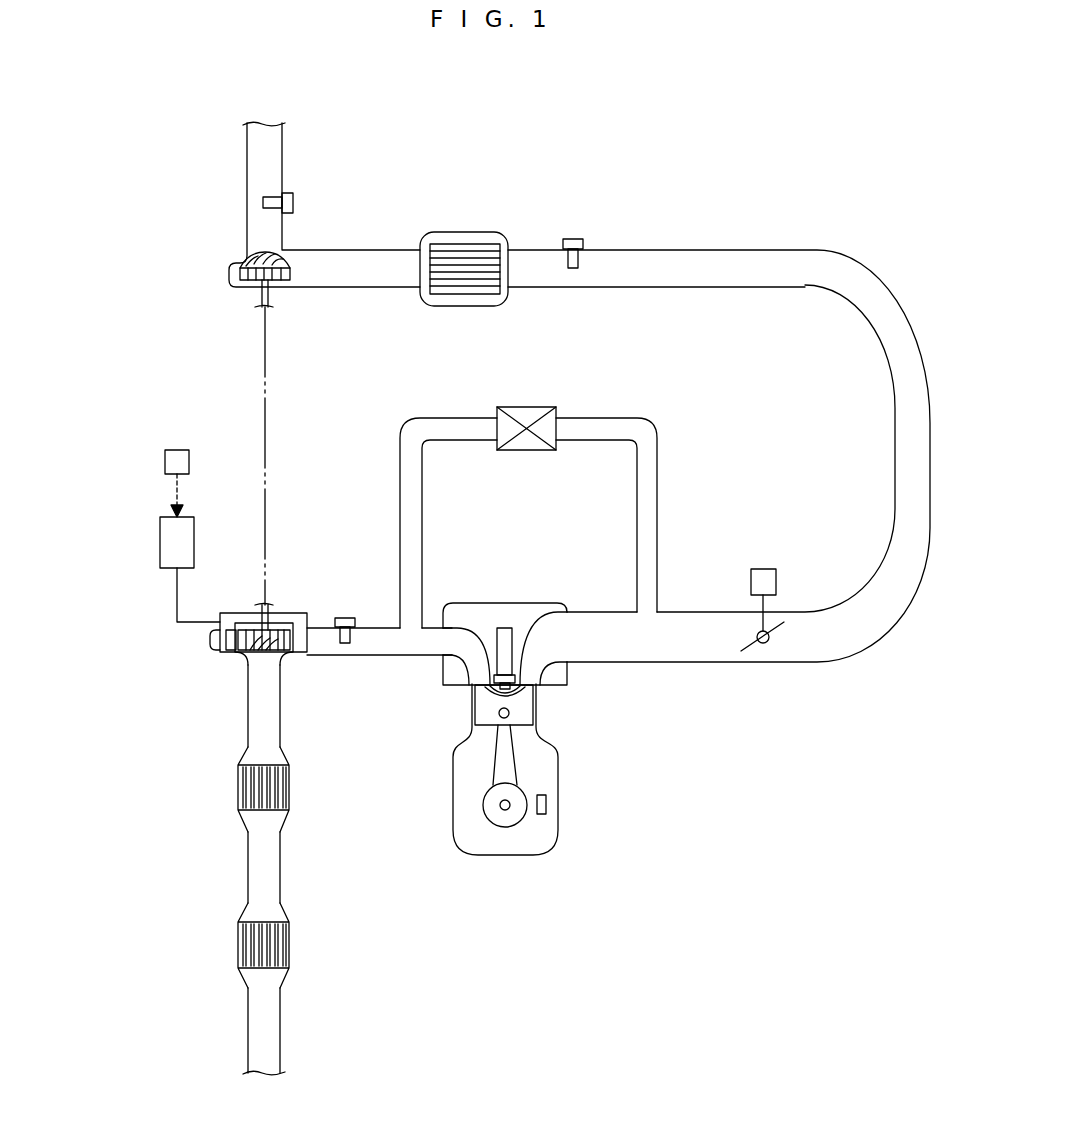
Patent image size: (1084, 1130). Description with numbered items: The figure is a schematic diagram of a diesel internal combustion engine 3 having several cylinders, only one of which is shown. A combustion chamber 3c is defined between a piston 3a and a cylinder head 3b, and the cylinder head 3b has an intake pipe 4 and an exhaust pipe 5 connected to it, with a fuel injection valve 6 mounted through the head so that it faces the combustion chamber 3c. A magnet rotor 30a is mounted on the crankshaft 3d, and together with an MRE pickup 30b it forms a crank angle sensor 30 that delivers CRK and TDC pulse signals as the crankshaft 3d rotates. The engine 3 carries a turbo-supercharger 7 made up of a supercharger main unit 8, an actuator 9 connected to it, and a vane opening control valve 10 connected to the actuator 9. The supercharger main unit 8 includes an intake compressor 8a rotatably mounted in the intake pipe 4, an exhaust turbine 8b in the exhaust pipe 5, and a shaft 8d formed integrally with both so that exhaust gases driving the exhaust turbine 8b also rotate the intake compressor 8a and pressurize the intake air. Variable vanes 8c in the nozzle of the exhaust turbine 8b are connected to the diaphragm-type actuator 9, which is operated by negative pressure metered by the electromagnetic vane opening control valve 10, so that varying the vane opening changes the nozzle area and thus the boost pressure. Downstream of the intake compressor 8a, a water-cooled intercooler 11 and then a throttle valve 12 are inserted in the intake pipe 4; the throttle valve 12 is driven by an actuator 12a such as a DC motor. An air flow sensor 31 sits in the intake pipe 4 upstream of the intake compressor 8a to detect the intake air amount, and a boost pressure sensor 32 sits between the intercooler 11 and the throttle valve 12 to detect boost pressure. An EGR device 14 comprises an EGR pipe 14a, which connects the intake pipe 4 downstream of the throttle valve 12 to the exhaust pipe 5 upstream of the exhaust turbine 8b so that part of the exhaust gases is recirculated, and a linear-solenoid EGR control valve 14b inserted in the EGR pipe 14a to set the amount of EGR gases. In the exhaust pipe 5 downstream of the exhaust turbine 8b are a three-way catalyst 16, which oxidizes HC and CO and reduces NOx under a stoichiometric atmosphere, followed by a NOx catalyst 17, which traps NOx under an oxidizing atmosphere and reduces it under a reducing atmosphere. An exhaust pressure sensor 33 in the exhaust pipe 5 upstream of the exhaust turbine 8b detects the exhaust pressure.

The internal combustion engine 3 is at (468, 862).
The piston 3a is at (537, 712).
The cylinder head 3b is at (532, 612).
The combustion chamber 3c is at (527, 692).
The crankshaft 3d is at (510, 803).
The intake pipe 4 is at (247, 160).
The exhaust pipe 5 is at (363, 657).
The fuel injection valve 6 is at (502, 628).
The turbo-supercharger 7 is at (118, 656).
The supercharger main unit 8 is at (224, 240).
The intake compressor 8a is at (290, 276).
The exhaust turbine 8b is at (284, 655).
The variable vanes 8c is at (228, 648).
The shaft 8d is at (264, 418).
The actuator 9 is at (160, 545).
The vane opening control valve 10 is at (165, 460).
The intercooler 11 is at (470, 232).
The throttle valve 12 is at (785, 622).
The actuator 12a is at (771, 568).
The EGR device 14 is at (558, 358).
The EGR pipe 14a is at (400, 507).
The EGR control valve 14b is at (508, 450).
The three-way catalyst 16 is at (290, 790).
The NOx catalyst 17 is at (290, 945).
The crank angle sensor 30 is at (580, 912).
The magnet rotor 30a is at (512, 827).
The MRE pickup 30b is at (541, 815).
The air flow sensor 31 is at (294, 200).
The boost pressure sensor 32 is at (575, 239).
The exhaust pressure sensor 33 is at (343, 618).